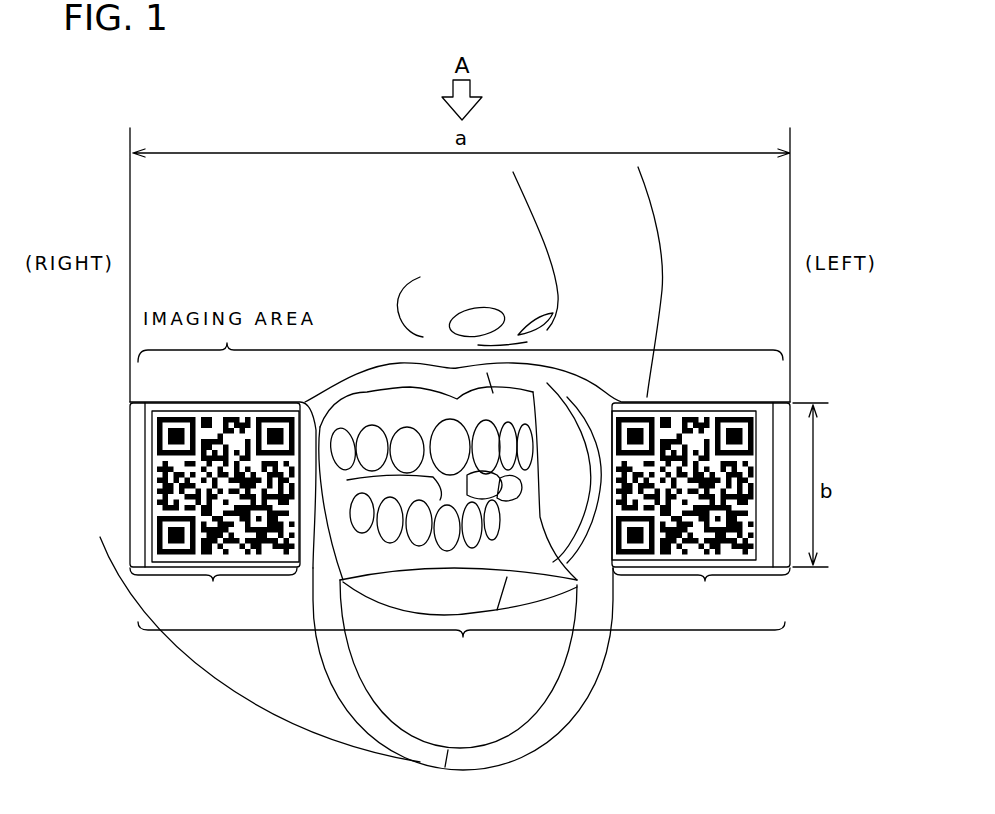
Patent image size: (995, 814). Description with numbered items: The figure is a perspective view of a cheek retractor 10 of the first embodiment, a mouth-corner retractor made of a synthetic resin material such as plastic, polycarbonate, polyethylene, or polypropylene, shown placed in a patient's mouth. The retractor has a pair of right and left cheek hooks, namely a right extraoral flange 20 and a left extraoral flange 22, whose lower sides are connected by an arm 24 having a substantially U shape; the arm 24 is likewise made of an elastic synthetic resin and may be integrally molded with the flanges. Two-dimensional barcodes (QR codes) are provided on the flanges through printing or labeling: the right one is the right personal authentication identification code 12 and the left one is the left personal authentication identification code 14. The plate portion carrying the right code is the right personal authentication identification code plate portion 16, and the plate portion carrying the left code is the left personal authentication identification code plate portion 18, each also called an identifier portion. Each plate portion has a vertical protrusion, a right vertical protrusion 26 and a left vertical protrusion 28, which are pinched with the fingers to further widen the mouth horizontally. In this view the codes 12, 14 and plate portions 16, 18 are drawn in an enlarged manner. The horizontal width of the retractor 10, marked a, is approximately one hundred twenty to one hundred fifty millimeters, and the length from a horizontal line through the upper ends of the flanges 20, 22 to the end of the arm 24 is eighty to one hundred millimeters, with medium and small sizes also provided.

The cheek retractor 10 is at (297, 585).
The right personal authentication identification code 12 is at (217, 413).
The left personal authentication identification code 14 is at (707, 415).
The right personal authentication identification code plate portion 16 is at (213, 581).
The left personal authentication identification code plate portion 18 is at (705, 581).
The right extraoral flange 20 is at (368, 390).
The left extraoral flange 22 is at (575, 388).
The arm 24 is at (460, 752).
The right vertical protrusion 26 is at (130, 497).
The left vertical protrusion 28 is at (782, 435).